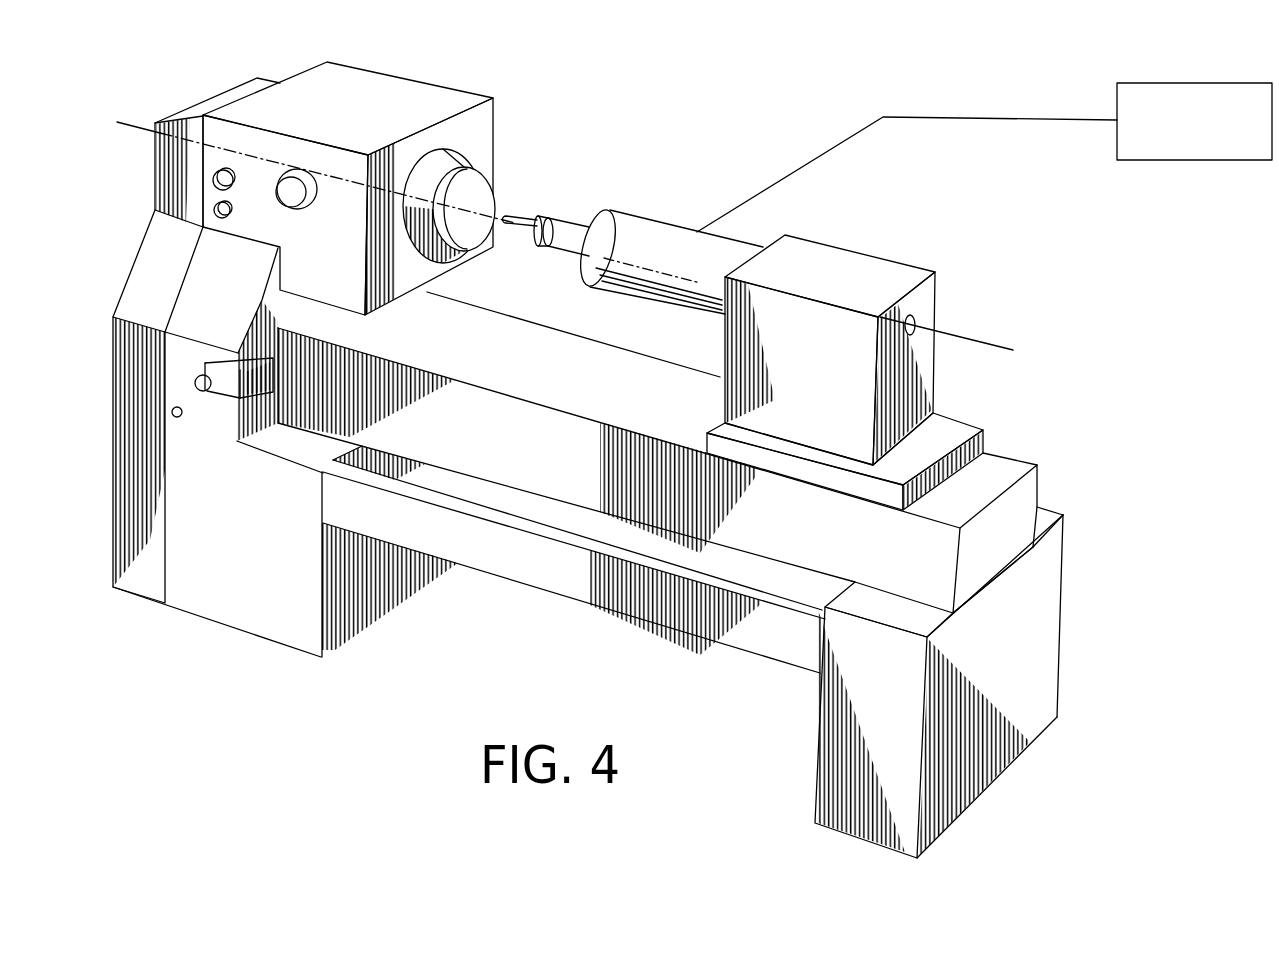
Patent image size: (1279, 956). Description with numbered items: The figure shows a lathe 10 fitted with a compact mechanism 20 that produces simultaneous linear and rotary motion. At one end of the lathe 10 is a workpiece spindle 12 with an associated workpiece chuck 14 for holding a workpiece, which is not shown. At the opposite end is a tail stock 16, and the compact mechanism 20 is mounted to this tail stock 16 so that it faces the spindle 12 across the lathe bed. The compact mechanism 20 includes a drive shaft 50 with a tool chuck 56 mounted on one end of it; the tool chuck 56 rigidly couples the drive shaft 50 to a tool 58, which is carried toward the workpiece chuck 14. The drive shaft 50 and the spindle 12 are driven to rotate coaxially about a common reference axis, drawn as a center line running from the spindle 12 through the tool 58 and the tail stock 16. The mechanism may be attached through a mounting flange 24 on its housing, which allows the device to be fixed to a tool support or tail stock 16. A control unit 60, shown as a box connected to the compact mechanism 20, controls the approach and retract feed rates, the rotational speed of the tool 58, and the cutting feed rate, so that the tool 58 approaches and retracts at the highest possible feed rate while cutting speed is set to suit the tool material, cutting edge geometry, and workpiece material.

The lathe 10 is at (261, 681).
The workpiece spindle 12 is at (452, 162).
The workpiece chuck 14 is at (497, 174).
The tail stock 16 is at (847, 267).
The compact mechanism 20 is at (650, 233).
The mounting flange 24 is at (138, 127).
The drive shaft 50 is at (567, 223).
The tool chuck 56 is at (545, 218).
The tool 58 is at (523, 217).
The control unit 60 is at (1181, 151).